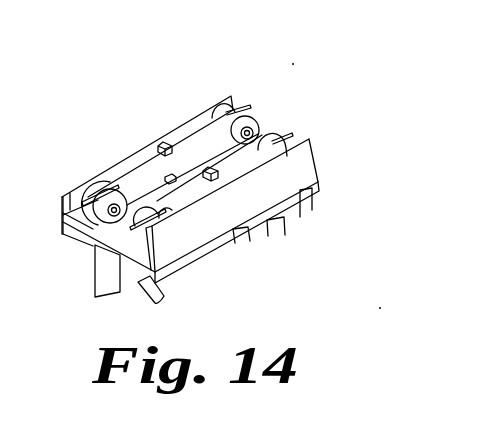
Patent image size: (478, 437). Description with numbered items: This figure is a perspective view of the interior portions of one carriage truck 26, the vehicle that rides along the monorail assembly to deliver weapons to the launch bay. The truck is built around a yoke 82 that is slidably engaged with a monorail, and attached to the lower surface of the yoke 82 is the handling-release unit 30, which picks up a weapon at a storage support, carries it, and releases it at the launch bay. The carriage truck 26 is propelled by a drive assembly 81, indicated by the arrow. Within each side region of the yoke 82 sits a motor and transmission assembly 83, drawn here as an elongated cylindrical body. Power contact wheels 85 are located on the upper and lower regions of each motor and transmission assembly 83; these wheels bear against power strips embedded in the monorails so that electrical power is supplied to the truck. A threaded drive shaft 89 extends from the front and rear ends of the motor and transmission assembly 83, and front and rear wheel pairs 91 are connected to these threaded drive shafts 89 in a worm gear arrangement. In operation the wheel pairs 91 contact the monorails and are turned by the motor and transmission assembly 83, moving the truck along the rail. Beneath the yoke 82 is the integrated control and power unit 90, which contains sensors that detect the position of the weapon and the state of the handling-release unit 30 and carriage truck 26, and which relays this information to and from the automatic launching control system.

The carriage truck 26 is at (112, 163).
The handling-release unit 30 is at (110, 270).
The drive assembly 81 is at (303, 89).
The yoke 82 is at (63, 200).
The motor and transmission assembly 83 is at (193, 147).
The power contact wheel 85 is at (165, 143).
The threaded drive shaft 89 is at (92, 200).
The integrated control and power unit 90 is at (290, 207).
The front and rear wheel pairs 91 is at (75, 242).